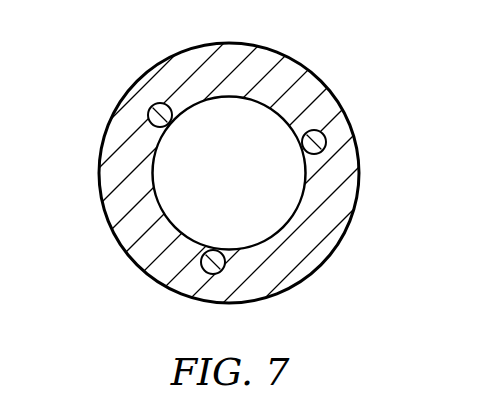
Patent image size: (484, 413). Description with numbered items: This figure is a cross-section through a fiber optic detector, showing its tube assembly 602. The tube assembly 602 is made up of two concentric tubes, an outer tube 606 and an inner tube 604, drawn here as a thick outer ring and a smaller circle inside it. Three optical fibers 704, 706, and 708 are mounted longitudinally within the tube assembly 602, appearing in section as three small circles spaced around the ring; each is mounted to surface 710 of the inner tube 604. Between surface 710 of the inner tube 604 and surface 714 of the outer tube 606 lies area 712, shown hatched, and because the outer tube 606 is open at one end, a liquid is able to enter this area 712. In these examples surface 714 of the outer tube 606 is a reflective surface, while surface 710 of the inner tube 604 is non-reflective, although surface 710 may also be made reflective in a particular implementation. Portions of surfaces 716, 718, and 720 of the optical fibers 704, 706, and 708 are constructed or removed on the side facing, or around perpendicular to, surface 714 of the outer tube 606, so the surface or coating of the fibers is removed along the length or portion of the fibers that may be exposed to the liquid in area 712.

The tube assembly 602 is at (337, 103).
The inner tube 604 is at (284, 225).
The outer tube 606 is at (356, 202).
The optical fiber 704 is at (155, 124).
The optical fiber 706 is at (327, 141).
The optical fiber 708 is at (200, 269).
The surface of inner tube 710 is at (250, 104).
The area 712 is at (112, 173).
The surface of outer tube 714 is at (128, 255).
The surface of optical fiber 716 is at (151, 103).
The surface of optical fiber 718 is at (321, 157).
The surface of optical fiber 720 is at (223, 251).